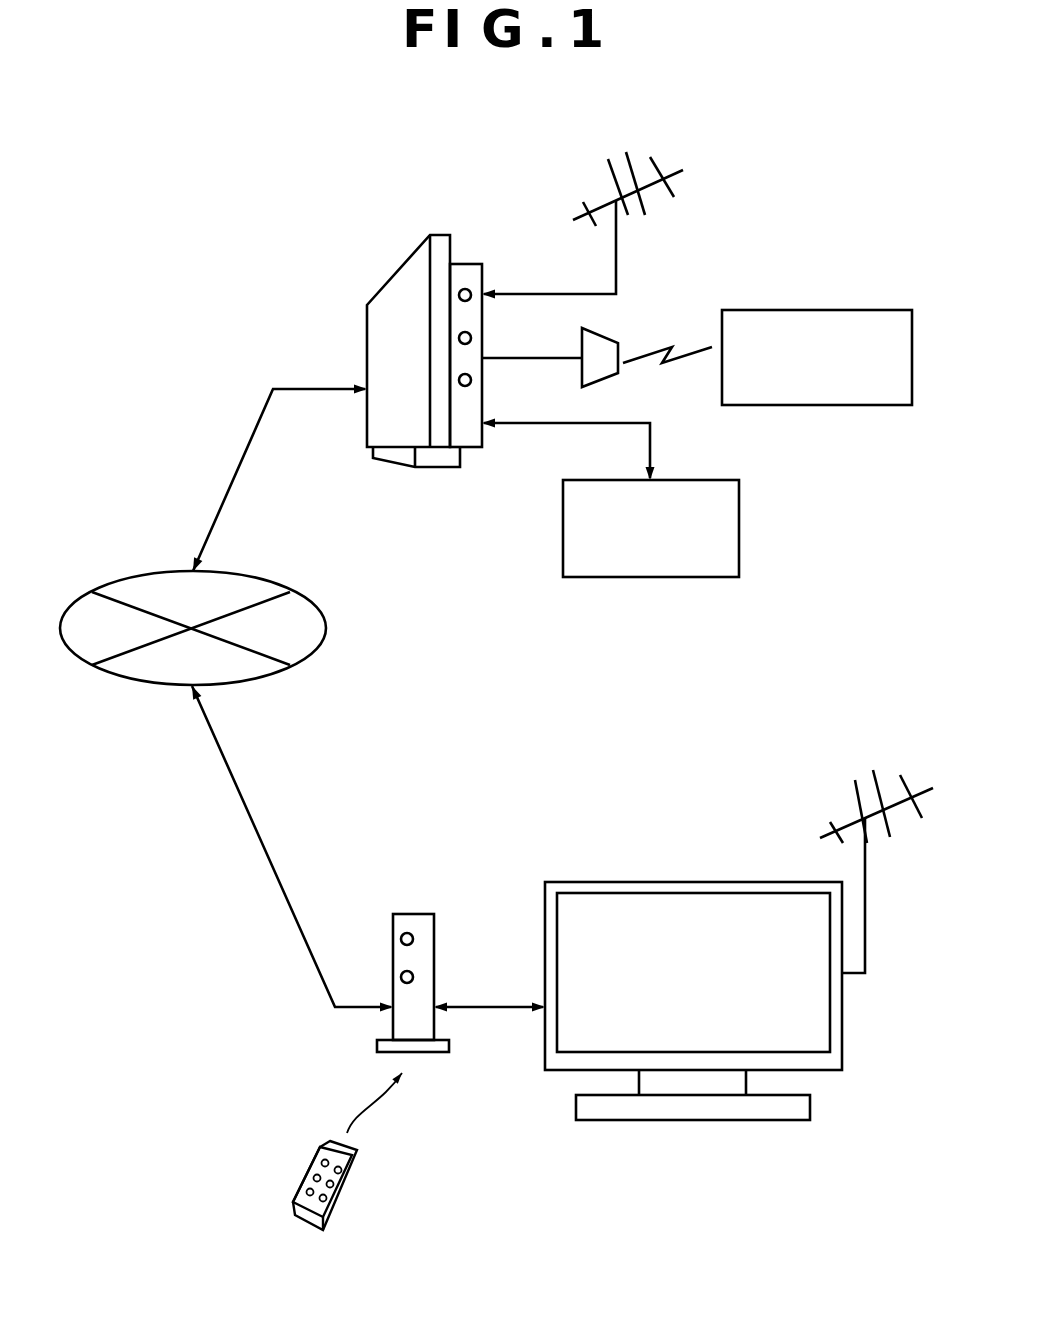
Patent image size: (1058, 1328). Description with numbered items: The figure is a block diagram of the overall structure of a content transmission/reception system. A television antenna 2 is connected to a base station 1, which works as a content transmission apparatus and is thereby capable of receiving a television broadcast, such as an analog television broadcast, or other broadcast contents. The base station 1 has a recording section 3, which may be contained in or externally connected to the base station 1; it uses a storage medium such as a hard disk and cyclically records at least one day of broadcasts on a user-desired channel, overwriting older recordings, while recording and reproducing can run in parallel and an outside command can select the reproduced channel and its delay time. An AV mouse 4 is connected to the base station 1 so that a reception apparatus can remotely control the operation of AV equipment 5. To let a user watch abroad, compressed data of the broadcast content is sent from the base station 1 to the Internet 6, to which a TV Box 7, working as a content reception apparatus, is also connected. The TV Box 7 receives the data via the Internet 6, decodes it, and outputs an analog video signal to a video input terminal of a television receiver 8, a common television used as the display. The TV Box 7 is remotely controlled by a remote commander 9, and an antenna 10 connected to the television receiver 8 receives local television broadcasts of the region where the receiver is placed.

The base station 1 is at (393, 277).
The television antenna 2 is at (598, 197).
The recording section 3 is at (685, 480).
The AV mouse 4 is at (605, 331).
The AV equipment 5 is at (855, 310).
The Internet 6 is at (83, 593).
The TV Box 7 is at (415, 914).
The television receiver 8 is at (600, 882).
The remote commander 9 is at (348, 1188).
The antenna 10 is at (845, 802).